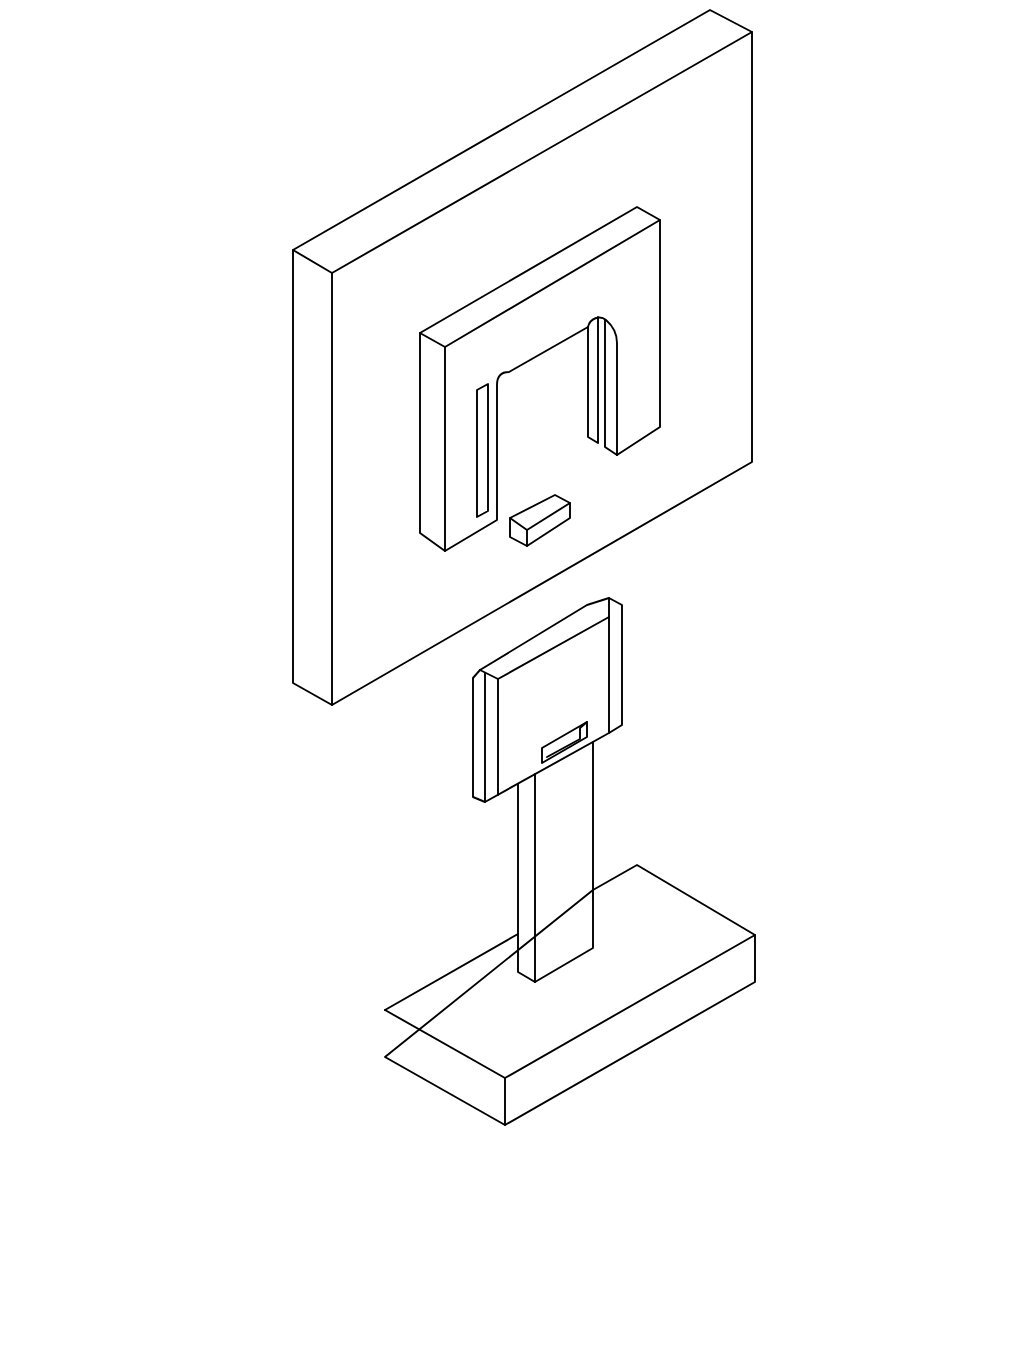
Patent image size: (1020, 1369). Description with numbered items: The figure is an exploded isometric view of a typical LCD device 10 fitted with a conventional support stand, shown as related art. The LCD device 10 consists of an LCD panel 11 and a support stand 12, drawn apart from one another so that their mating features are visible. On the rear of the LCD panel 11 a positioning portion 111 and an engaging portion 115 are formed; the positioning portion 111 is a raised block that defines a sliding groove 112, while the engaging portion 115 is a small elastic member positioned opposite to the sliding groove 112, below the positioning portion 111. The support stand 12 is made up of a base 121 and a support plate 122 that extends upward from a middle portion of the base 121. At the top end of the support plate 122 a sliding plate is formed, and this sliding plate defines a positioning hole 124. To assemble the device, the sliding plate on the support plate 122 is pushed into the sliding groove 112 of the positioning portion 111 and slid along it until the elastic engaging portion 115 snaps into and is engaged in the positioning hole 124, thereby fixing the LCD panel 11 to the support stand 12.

The LCD device 10 is at (268, 83).
The LCD panel 11 is at (243, 329).
The positioning portion 111 is at (642, 272).
The sliding groove 112 is at (603, 380).
The engaging portion 115 is at (557, 520).
The support stand 12 is at (755, 805).
The base 121 is at (452, 998).
The support plate 122 is at (600, 672).
The positioning hole 124 is at (568, 745).